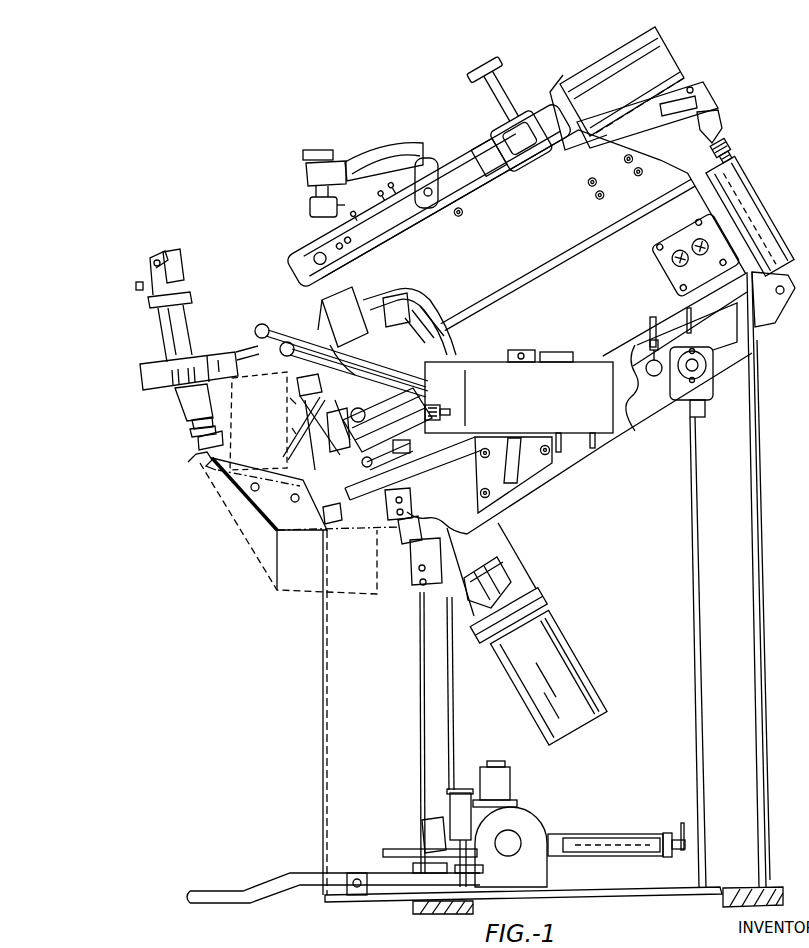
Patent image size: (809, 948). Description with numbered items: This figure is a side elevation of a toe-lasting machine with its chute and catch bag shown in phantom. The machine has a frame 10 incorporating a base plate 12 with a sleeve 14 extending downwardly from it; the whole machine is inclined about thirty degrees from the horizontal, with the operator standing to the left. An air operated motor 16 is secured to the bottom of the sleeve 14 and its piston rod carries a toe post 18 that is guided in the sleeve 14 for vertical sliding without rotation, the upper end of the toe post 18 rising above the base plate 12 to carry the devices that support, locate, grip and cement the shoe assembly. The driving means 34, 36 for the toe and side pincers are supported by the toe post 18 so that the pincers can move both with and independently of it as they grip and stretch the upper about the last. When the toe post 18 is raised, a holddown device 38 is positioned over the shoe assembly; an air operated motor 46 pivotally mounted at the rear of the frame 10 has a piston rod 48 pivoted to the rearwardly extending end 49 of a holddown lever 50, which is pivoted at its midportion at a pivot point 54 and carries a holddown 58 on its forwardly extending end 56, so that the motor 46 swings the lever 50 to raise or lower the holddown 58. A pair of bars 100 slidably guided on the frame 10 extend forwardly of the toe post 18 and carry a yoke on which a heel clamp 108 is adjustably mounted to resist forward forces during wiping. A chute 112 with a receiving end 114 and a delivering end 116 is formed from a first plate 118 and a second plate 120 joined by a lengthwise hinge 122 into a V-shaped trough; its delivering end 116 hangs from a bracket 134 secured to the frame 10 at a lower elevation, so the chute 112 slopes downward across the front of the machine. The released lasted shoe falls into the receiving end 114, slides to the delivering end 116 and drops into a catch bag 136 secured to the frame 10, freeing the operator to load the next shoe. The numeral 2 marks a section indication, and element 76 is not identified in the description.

The section line 2- 2 is at (113, 243).
The frame 10 is at (757, 443).
The base plate 12 is at (398, 471).
The sleeve 14 is at (520, 590).
The air operated motor 16 is at (565, 674).
The toe post 18 is at (430, 458).
The driving means 34 is at (445, 332).
The driving means 36 is at (343, 317).
The holddown device 38 is at (421, 126).
The air operated motor 46 is at (738, 189).
The piston rod 48 is at (724, 156).
The rearwardly extending end 49 is at (700, 97).
The holddown lever 50 is at (447, 168).
The pivot point 54 is at (433, 191).
The forwardly extending end 56 is at (380, 158).
The holddown 58 is at (310, 207).
The supply roll housing 76 is at (653, 47).
The bars 100 is at (287, 342).
The heel clamp 108 is at (182, 268).
The chute 112 is at (198, 467).
The receiving end 114 is at (244, 335).
The delivering end 116 is at (212, 484).
The first plate 118 is at (290, 403).
The second plate 120 is at (230, 390).
The hinge 122 is at (292, 431).
The bracket 134 is at (348, 400).
The catch bag 136 is at (252, 526).